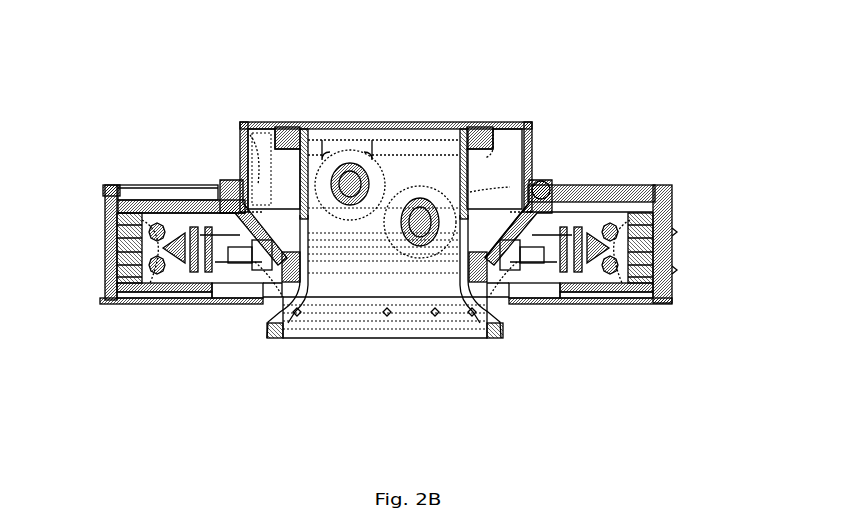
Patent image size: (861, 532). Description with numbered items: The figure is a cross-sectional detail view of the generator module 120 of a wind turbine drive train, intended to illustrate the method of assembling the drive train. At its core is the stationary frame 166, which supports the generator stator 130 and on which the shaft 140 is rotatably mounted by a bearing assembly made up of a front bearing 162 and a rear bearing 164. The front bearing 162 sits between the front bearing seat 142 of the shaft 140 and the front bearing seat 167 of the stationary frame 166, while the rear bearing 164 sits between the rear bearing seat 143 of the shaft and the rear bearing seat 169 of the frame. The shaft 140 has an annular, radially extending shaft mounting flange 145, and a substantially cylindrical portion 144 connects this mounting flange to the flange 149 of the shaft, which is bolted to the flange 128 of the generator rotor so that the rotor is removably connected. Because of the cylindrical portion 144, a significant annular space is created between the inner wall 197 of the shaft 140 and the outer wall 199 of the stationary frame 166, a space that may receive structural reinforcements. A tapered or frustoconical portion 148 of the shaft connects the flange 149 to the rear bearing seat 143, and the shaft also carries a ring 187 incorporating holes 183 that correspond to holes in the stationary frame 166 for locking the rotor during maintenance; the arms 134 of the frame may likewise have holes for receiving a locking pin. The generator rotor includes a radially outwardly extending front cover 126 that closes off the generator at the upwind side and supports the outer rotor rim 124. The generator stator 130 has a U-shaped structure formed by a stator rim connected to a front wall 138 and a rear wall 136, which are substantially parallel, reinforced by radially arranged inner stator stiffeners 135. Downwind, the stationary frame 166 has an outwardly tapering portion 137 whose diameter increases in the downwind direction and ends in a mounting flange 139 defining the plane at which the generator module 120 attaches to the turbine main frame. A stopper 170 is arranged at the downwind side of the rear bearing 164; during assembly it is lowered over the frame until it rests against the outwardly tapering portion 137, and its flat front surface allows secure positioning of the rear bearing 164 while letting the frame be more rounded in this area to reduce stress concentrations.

The generator module 120 is at (617, 70).
The outer rotor rim 124 is at (673, 243).
The front cover 126 is at (623, 185).
The flange of the generator rotor 128 is at (513, 187).
The generator stator 130 is at (597, 300).
The arms 134 is at (547, 290).
The inner stator stiffeners 135 is at (112, 247).
The rear wall 136 is at (167, 288).
The outwardly tapering portion 137 is at (270, 307).
The front wall 138 is at (125, 185).
The mounting flange 139 is at (263, 313).
The shaft 140 is at (218, 160).
The front bearing seat 142 is at (250, 165).
The rear bearing seat 143 is at (503, 307).
The substantially cylindrical portion 144 is at (475, 157).
The shaft mounting flange 145 is at (258, 122).
The frustoconical portion 148 is at (245, 163).
The flange of the shaft 149 is at (220, 190).
The front bearing 162 is at (293, 122).
The rear bearing 164 is at (340, 338).
The stationary frame 166 is at (321, 122).
The front bearing seat 167 is at (316, 122).
The rear bearing seat 169 is at (460, 338).
The stopper 170 is at (303, 338).
The holes 183 is at (233, 307).
The ring 187 is at (518, 287).
The inner wall of the shaft 197 is at (425, 130).
The outer wall of the stationary frame 199 is at (502, 122).